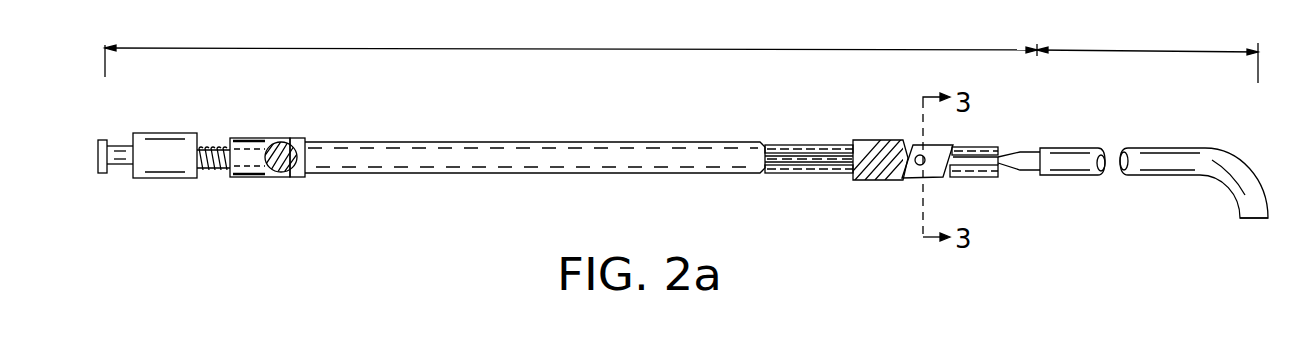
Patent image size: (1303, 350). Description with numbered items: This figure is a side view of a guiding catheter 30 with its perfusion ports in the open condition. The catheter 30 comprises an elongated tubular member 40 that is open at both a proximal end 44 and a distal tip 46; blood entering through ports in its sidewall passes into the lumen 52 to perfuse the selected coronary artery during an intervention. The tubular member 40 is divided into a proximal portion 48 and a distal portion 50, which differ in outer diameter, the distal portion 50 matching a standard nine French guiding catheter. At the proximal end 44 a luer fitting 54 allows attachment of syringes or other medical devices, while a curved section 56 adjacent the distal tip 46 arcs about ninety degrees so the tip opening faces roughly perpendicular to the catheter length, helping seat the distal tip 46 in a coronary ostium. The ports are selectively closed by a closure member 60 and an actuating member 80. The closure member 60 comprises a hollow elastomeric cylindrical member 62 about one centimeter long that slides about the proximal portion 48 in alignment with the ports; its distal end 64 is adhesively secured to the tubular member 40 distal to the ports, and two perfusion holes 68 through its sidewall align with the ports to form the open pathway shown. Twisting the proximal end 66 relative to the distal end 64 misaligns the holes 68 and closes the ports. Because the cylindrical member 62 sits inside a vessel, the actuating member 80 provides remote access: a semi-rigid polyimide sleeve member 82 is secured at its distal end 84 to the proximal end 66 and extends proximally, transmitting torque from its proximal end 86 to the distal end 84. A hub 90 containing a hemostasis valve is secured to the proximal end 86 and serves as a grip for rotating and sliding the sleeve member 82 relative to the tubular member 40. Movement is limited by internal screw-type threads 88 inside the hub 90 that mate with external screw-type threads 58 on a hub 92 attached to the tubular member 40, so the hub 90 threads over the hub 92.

The guiding catheter 30 is at (535, 147).
The tubular member 40 is at (1065, 134).
The proximal end 44 is at (98, 156).
The distal tip 46 is at (1253, 220).
The proximal portion 48 is at (505, 48).
The distal portion 50 is at (1078, 52).
The lumen 52 is at (785, 156).
The luer fitting 54 is at (103, 174).
The curved section 56 is at (1228, 152).
The external screw-type threads 58 is at (212, 147).
The closure member 60 is at (876, 201).
The hollow cylindrical member 62 is at (945, 145).
The distal end of cylindrical member 64 is at (990, 178).
The proximal end of cylindrical member 66 is at (862, 182).
The perfusion holes 68 is at (917, 172).
The actuating member 80 is at (422, 194).
The sleeve member 82 is at (470, 142).
The distal end of sleeve member 84 is at (860, 145).
The proximal end of sleeve member 86 is at (312, 140).
The internal screw-type threads 88 is at (282, 141).
The hub 90 is at (252, 138).
The hub 92 is at (188, 179).